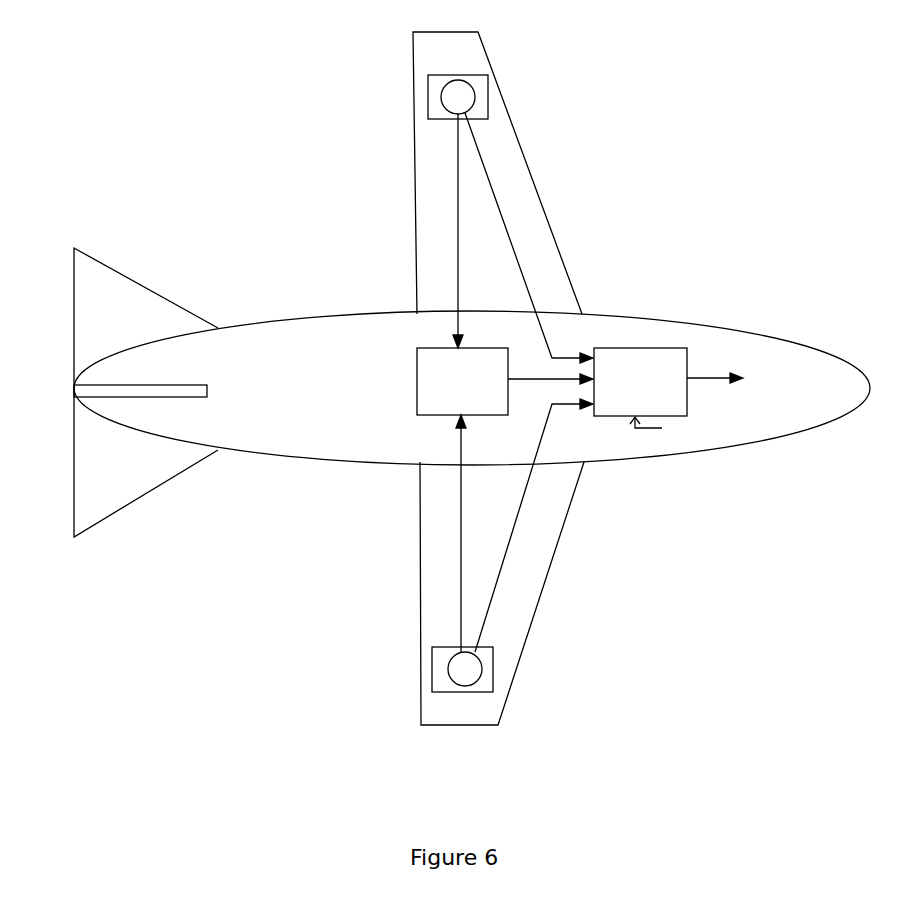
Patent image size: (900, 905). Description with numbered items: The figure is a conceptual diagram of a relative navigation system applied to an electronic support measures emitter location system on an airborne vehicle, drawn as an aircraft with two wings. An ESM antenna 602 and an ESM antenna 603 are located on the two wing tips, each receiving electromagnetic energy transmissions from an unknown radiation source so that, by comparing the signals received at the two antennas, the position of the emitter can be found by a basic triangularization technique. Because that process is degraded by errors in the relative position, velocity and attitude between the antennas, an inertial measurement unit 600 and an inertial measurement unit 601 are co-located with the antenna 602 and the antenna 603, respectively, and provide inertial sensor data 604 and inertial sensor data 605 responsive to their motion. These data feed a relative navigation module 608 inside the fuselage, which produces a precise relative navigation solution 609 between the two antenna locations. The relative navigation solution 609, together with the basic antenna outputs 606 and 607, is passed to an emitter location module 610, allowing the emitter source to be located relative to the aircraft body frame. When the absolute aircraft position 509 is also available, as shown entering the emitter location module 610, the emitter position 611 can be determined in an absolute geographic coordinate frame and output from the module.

The absolute aircraft position 509 is at (699, 433).
The inertial measurement unit 600 is at (495, 671).
The inertial measurement unit 601 is at (488, 87).
The ESM antenna 602 is at (448, 670).
The ESM antenna 603 is at (441, 98).
The inertial sensor data 604 is at (446, 231).
The inertial sensor data 605 is at (449, 533).
The antenna output 606 is at (529, 238).
The antenna output 607 is at (534, 525).
The relative navigation module 608 is at (443, 381).
The relative navigation solution 609 is at (550, 372).
The emitter location module 610 is at (640, 372).
The emitter position 611 is at (741, 388).